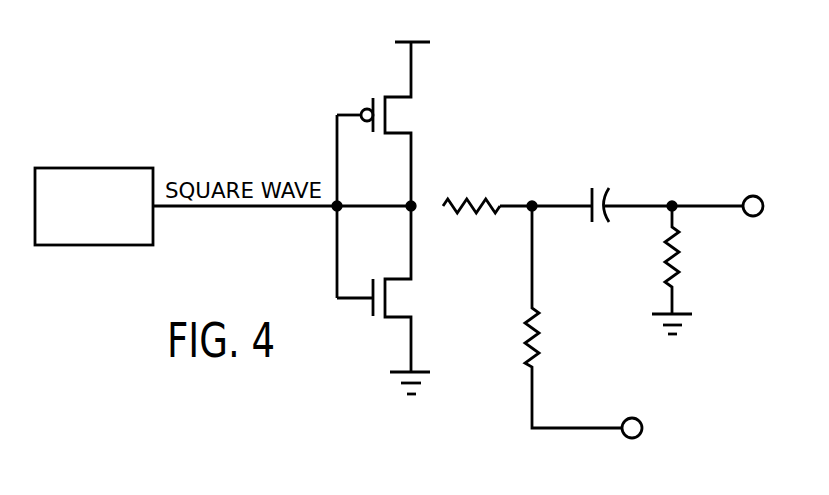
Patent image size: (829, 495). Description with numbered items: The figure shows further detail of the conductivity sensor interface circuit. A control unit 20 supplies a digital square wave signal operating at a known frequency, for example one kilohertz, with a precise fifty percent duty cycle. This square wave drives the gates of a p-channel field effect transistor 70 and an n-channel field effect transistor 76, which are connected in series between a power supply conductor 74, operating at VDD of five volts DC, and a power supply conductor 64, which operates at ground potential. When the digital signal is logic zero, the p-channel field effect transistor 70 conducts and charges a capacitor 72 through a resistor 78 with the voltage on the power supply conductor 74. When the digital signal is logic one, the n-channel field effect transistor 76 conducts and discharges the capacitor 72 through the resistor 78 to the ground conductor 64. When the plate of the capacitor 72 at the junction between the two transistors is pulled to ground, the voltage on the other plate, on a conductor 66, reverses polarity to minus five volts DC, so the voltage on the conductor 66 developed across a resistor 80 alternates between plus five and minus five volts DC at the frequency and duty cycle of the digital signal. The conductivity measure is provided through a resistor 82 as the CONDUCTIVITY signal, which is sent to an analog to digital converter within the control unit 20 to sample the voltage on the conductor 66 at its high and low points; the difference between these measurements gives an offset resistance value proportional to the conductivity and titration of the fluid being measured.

The control unit 20 is at (95, 245).
The power supply conductor 74 is at (400, 42).
The p-channel field effect transistor 70 is at (405, 115).
The n-channel field effect transistor 76 is at (405, 298).
The power supply conductor 64 is at (403, 372).
The resistor 78 is at (475, 200).
The capacitor 72 is at (600, 188).
The conductor 66 is at (757, 197).
The resistor 80 is at (668, 256).
The resistor 82 is at (538, 340).